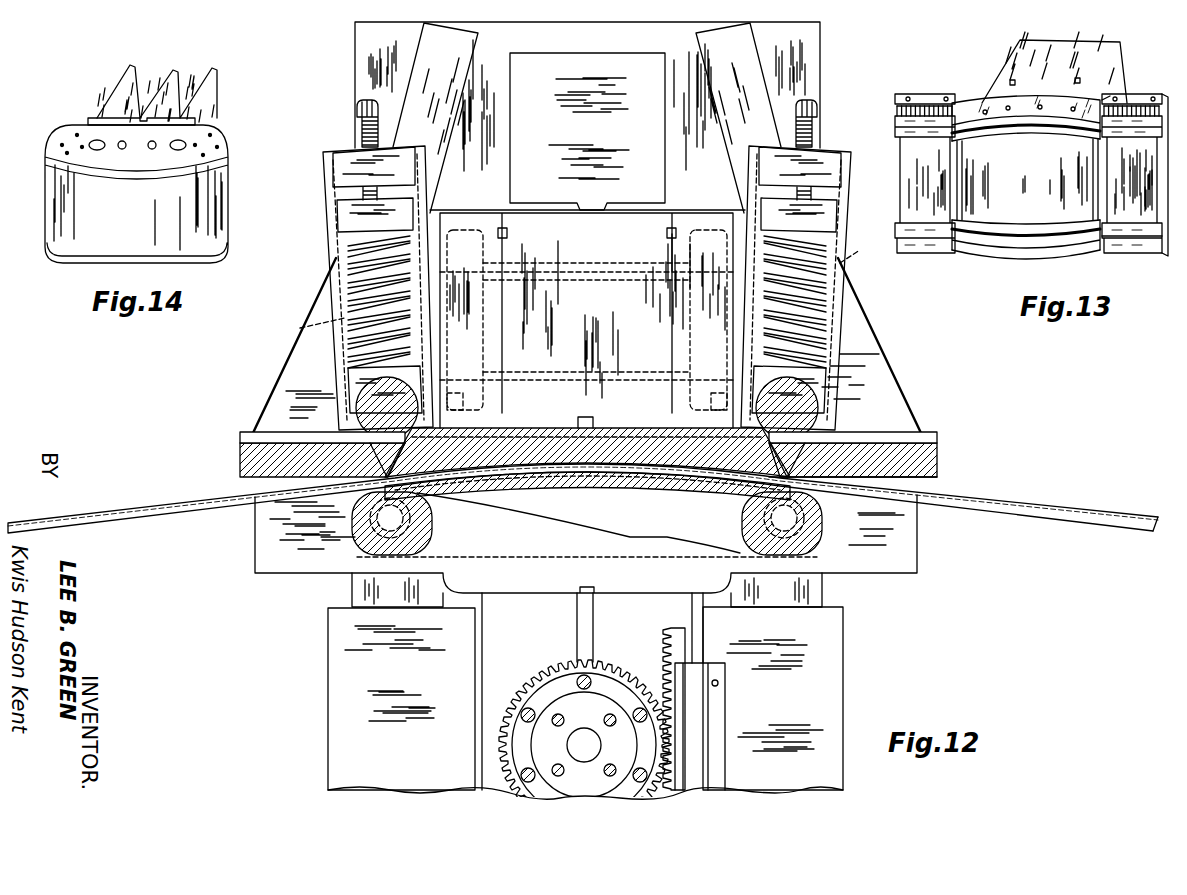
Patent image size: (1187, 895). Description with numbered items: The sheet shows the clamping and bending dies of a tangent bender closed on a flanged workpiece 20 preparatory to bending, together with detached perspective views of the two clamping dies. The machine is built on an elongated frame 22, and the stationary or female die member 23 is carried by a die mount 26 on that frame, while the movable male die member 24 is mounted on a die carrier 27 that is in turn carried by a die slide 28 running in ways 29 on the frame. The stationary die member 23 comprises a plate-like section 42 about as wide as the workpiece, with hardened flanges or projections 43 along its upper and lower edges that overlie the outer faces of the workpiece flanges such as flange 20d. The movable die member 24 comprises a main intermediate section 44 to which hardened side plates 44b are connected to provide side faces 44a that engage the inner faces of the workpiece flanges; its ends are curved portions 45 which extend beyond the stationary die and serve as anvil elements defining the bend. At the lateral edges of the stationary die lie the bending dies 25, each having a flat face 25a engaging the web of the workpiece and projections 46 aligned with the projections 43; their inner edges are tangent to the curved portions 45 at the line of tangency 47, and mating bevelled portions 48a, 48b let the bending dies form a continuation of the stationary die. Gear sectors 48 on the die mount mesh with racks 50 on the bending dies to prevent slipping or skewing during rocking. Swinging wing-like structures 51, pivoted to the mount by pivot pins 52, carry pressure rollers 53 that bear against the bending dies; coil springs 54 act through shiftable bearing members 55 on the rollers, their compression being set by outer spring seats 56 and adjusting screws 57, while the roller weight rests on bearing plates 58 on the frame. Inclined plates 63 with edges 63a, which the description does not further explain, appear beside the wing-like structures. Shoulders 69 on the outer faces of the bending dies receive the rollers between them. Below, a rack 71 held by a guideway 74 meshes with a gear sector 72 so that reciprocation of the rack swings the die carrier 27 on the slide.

In FIG. 12, the flanged workpiece 20 is at (985, 494).
In FIG. 12, the flange of the workpiece 20d is at (1037, 510).
In FIG. 12, the base or frame 22 is at (363, 42).
In FIG. 12, the stationary die member 23 is at (613, 437).
In FIG. 13, the stationary die member 23 is at (995, 207).
In FIG. 12, the movable die member 24 is at (658, 481).
In FIG. 14, the movable die member 24 is at (63, 262).
In FIG. 12, the bending dies 25 is at (240, 458).
In FIG. 13, the bending dies 25 is at (898, 160).
In FIG. 13, the flat face of the bending die 25a is at (1130, 225).
In FIG. 12, the die mount 26 is at (677, 218).
In FIG. 13, the die mount 26 is at (1078, 43).
In FIG. 12, the die carrier 27 is at (476, 648).
In FIG. 14, the die carrier 27 is at (118, 84).
In FIG. 12, the die slide 28 is at (835, 677).
In FIG. 12, the ways 29 is at (820, 595).
In FIG. 12, the plate-like section 42 is at (548, 443).
In FIG. 13, the plate-like section 42 is at (1040, 205).
In FIG. 13, the flanges or projections 43 is at (988, 127).
In FIG. 14, the main intermediate section 44 is at (177, 252).
In FIG. 14, the side faces 44a is at (122, 165).
In FIG. 14, the hardened side plates 44b is at (222, 164).
In FIG. 12, the curved portions 45 is at (815, 535).
In FIG. 14, the curved portions 45 is at (224, 207).
In FIG. 12, the flanges or projections of the bending dies 46 is at (240, 490).
In FIG. 13, the flanges or projections of the bending dies 46 is at (918, 250).
In FIG. 12, the line of tangency 47 is at (787, 472).
In FIG. 12, the gear sectors 48 is at (798, 542).
In FIG. 12, the bevelled mating portion 48a is at (723, 482).
In FIG. 13, the bevelled mating portion 48a is at (980, 105).
In FIG. 12, the bevelled mating portion 48b is at (800, 432).
In FIG. 13, the bevelled mating portion 48b is at (962, 110).
In FIG. 12, the racks 50 is at (940, 481).
In FIG. 13, the racks 50 is at (1133, 100).
In FIG. 12, the wing-like structures 51 is at (841, 316).
In FIG. 12, the pivot pins 52 is at (760, 520).
In FIG. 12, the pressure rollers 53 is at (357, 405).
In FIG. 12, the coil springs 54 is at (345, 256).
In FIG. 12, the shiftable bearing members 55 is at (352, 386).
In FIG. 12, the outer spring seats 56 is at (337, 222).
In FIG. 12, the adjusting screws 57 is at (362, 128).
In FIG. 12, the bearing plates 58 is at (905, 416).
In FIG. 12, the inclined plate 63 is at (700, 37).
In FIG. 12, the plate edge 63a is at (578, 287).
In FIG. 13, the flanges or shoulders 69 is at (1162, 232).
In FIG. 12, the rack 71 is at (683, 641).
In FIG. 12, the gear sector 72 is at (617, 660).
In FIG. 12, the guideway 74 is at (717, 712).